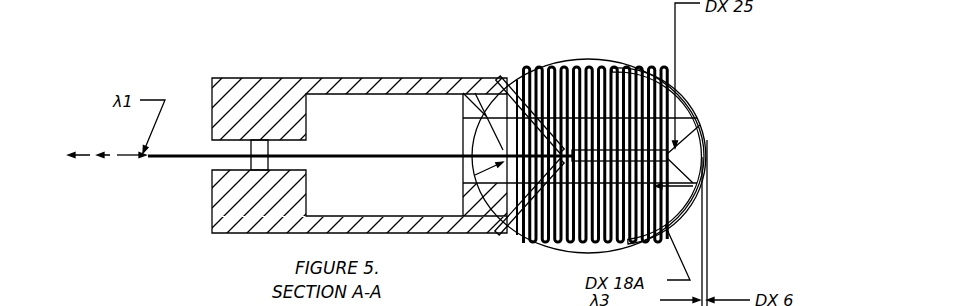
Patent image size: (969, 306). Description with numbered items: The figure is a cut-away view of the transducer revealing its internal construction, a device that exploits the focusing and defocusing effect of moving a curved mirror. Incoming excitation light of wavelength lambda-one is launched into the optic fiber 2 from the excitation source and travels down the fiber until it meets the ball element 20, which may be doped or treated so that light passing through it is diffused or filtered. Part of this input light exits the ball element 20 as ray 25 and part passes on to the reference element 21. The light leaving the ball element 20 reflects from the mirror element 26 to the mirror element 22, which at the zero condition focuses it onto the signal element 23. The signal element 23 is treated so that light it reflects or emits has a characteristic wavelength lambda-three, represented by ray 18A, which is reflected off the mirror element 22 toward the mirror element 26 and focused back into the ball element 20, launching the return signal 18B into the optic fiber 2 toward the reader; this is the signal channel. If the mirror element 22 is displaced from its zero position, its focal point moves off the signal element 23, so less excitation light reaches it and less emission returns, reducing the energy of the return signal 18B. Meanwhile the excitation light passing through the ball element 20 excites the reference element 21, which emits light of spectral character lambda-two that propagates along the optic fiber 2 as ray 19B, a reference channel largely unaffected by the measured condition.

The optic fiber 2 is at (410, 150).
The ray 18A is at (570, 173).
The return signal 18B is at (113, 150).
The ray 19B is at (75, 159).
The ball element 20 is at (495, 197).
The reference element 21 is at (573, 167).
The mirror element 22 is at (663, 80).
The signal element 23 is at (690, 140).
The ray 25 is at (490, 117).
The mirror element 26 is at (498, 77).